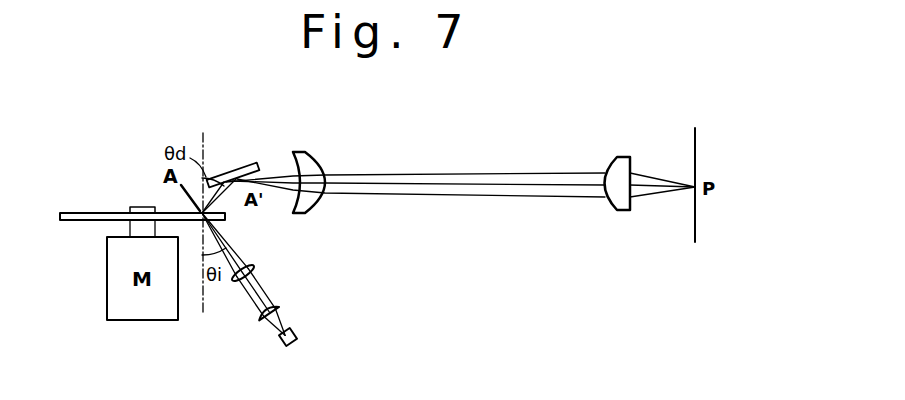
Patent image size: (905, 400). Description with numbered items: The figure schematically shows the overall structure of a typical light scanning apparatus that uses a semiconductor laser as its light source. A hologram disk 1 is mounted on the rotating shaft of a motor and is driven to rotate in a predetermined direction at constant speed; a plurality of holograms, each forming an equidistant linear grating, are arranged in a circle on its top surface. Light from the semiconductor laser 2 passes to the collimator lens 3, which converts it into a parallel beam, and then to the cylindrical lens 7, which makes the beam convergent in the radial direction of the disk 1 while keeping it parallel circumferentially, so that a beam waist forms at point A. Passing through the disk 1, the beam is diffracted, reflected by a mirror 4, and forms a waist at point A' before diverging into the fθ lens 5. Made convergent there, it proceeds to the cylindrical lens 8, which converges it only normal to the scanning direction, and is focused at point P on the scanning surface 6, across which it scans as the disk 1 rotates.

The hologram disk 1 is at (63, 222).
The semiconductor laser 2 is at (296, 329).
The collimator lens 3 is at (256, 319).
The mirror 4 is at (239, 167).
The fθ lens 5 is at (322, 165).
The scanning surface 6 is at (697, 142).
The cylindrical lens 7 is at (257, 271).
The cylindrical lens 8 is at (623, 156).